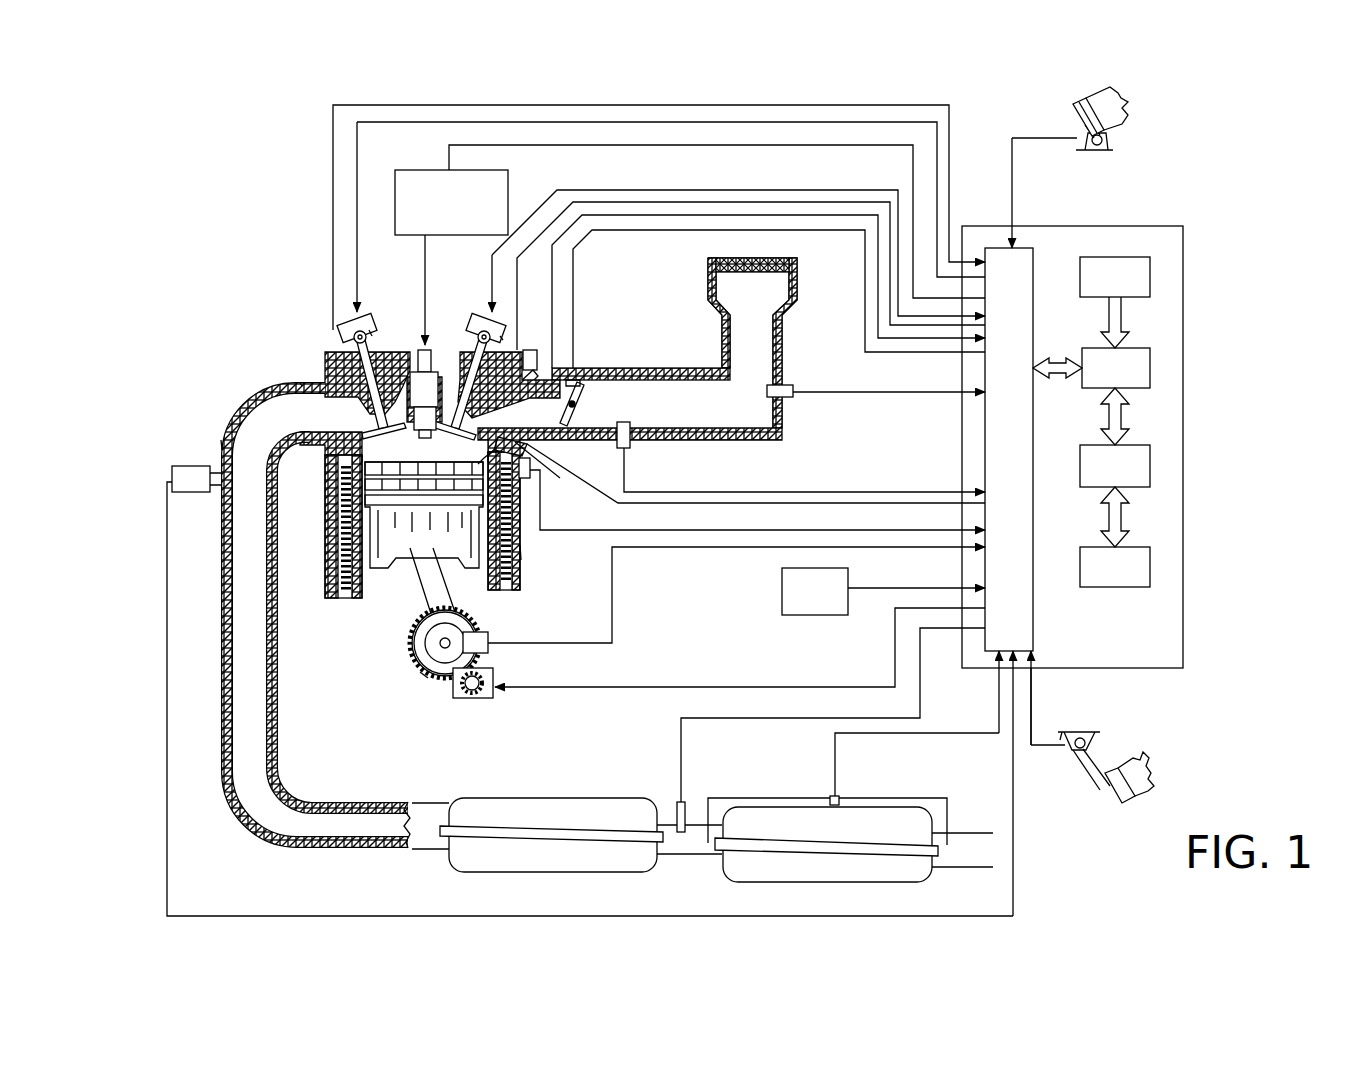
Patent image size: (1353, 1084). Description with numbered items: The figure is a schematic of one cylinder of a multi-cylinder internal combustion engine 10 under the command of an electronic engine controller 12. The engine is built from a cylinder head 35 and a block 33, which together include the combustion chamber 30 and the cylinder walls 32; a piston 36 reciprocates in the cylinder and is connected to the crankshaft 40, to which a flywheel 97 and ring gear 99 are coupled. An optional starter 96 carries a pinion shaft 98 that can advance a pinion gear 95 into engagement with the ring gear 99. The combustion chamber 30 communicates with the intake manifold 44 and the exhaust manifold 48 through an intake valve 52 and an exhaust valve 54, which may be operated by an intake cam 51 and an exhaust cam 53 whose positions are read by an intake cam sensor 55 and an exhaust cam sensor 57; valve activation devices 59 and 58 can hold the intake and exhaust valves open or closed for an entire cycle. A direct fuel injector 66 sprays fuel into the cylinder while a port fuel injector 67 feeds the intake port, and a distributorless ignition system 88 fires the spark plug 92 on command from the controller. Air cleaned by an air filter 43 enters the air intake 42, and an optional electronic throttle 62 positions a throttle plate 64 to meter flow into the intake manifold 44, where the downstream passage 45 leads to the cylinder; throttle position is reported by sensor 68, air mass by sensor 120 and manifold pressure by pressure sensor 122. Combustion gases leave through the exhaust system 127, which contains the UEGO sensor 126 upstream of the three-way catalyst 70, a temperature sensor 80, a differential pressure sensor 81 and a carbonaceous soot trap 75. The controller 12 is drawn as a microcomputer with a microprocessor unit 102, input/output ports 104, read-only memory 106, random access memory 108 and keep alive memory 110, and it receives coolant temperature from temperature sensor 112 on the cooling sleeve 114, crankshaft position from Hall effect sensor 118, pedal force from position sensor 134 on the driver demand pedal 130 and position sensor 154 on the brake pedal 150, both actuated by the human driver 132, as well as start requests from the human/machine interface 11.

The internal combustion engine 10 is at (268, 303).
The human/machine interface 11 is at (883, 591).
The electronic engine controller 12 is at (1183, 228).
The combustion chamber 30 is at (345, 520).
The cylinder walls 32 is at (368, 585).
The block 33 is at (322, 501).
The cylinder head 35 is at (320, 350).
The piston 36 is at (410, 580).
The crankshaft 40 is at (424, 671).
The air intake 42 is at (682, 318).
The air filter 43 is at (768, 274).
The intake manifold 44 is at (549, 417).
The intake passage downstream of throttle 45 is at (647, 417).
The exhaust manifold 48 is at (309, 422).
The intake cam 51 is at (482, 320).
The intake valve 52 is at (472, 408).
The exhaust cam 53 is at (367, 332).
The exhaust valve 54 is at (345, 412).
The intake cam sensor 55 is at (499, 338).
The exhaust cam sensor 57 is at (343, 326).
The valve activation device 58 is at (367, 336).
The valve activation device 59 is at (478, 338).
The electronic throttle 62 is at (576, 410).
The throttle plate 64 is at (578, 421).
The direct fuel injector 66 is at (529, 478).
The port fuel injector 67 is at (532, 360).
The throttle position sensor 68 is at (572, 378).
The three-way catalyst 70 is at (512, 800).
The carbonaceous soot trap 75 is at (740, 872).
The temperature sensor 80 is at (676, 806).
The differential pressure sensor 81 is at (840, 800).
The distributorless ignition system 88 is at (508, 183).
The spark plug 92 is at (427, 346).
The pinion gear 95 is at (478, 697).
The starter 96 is at (492, 673).
The flywheel 97 is at (412, 652).
The pinion shaft 98 is at (462, 690).
The ring gear 99 is at (430, 680).
The microprocessor unit 102 is at (1150, 370).
The input/output ports 104 is at (1035, 246).
The read-only memory 106 is at (1150, 270).
The random access memory 108 is at (1150, 468).
The keep alive memory 110 is at (1150, 565).
The temperature sensor 112 is at (526, 492).
The cooling sleeve 114 is at (512, 552).
The Hall effect sensor 118 is at (488, 640).
The air mass sensor 120 is at (793, 388).
The pressure sensor 122 is at (617, 446).
The universal exhaust gas oxygen sensor 126 is at (172, 472).
The exhaust system 127 is at (205, 445).
The driver demand pedal 130 is at (1072, 113).
The human driver 132 is at (1126, 104).
The position sensor 134 is at (1110, 138).
The brake pedal 150 is at (1098, 790).
The position sensor 154 is at (1064, 744).